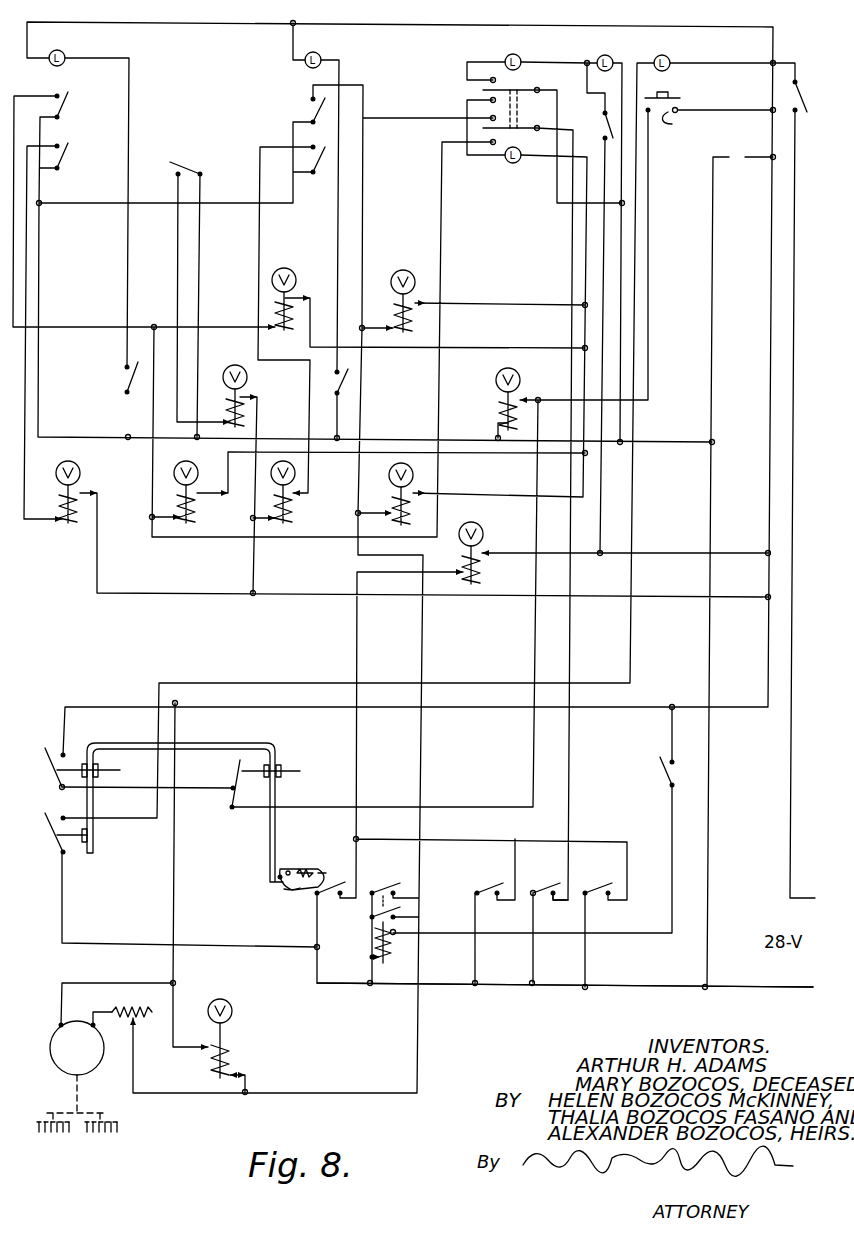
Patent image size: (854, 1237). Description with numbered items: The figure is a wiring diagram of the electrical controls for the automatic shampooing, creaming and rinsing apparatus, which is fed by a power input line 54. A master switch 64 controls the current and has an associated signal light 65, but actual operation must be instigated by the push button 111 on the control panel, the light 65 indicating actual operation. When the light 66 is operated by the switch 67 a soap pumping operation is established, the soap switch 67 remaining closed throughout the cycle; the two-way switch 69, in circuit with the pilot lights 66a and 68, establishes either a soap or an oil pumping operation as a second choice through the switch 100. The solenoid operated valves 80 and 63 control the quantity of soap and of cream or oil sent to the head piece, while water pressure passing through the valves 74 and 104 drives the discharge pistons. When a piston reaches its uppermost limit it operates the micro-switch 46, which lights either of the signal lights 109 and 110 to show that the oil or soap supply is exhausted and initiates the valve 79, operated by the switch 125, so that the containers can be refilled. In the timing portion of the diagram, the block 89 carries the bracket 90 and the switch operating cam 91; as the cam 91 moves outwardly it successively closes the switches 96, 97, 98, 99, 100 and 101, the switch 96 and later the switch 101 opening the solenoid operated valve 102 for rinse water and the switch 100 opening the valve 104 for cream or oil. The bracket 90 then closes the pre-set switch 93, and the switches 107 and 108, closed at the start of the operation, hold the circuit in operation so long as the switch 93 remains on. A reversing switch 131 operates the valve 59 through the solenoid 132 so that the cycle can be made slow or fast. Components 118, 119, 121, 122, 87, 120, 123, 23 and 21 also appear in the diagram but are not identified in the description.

The signal light 109 is at (65, 52).
The signal light 110 is at (320, 54).
The pilot light 66a is at (521, 54).
The light 66 is at (612, 54).
The signal light 65 is at (670, 54).
The light 68 is at (510, 165).
The two-way switch 69 is at (467, 94).
The switch 67 is at (610, 143).
The master switch 64 is at (802, 118).
The push button 111 is at (682, 116).
The switch 118 is at (66, 106).
The switch 119 is at (66, 157).
The switch 121 is at (302, 106).
The switch 122 is at (327, 163).
The switch 125 is at (188, 170).
The solenoid operated valve 63 is at (293, 270).
The solenoid operated valve 80 is at (408, 270).
The solenoid operated valve 79 is at (238, 363).
The micro-switch 46 is at (123, 379).
The relay 87 is at (522, 382).
The relay 120 is at (80, 456).
The valve 104 is at (180, 468).
The relay 123 is at (290, 465).
The solenoid operated valve 74 is at (413, 472).
The solenoid operated valve 102 is at (483, 535).
The bracket 90 is at (223, 739).
The pre-set switch 93 is at (278, 763).
The switch 107 is at (48, 743).
The switch 108 is at (50, 808).
The block 89 is at (283, 863).
The switch operating cam 91 is at (297, 889).
The switch 96 is at (332, 873).
The switch 97 is at (388, 881).
The switch 98 is at (403, 912).
The switch 99 is at (478, 885).
The switch 100 is at (543, 881).
The switch 101 is at (597, 881).
The reversing switch 131 is at (659, 778).
The solenoid 132 is at (393, 958).
The valve 59 is at (233, 1005).
The motor 23 is at (53, 1040).
The sensing contacts 21 is at (98, 1140).
The power input line 54 is at (750, 993).